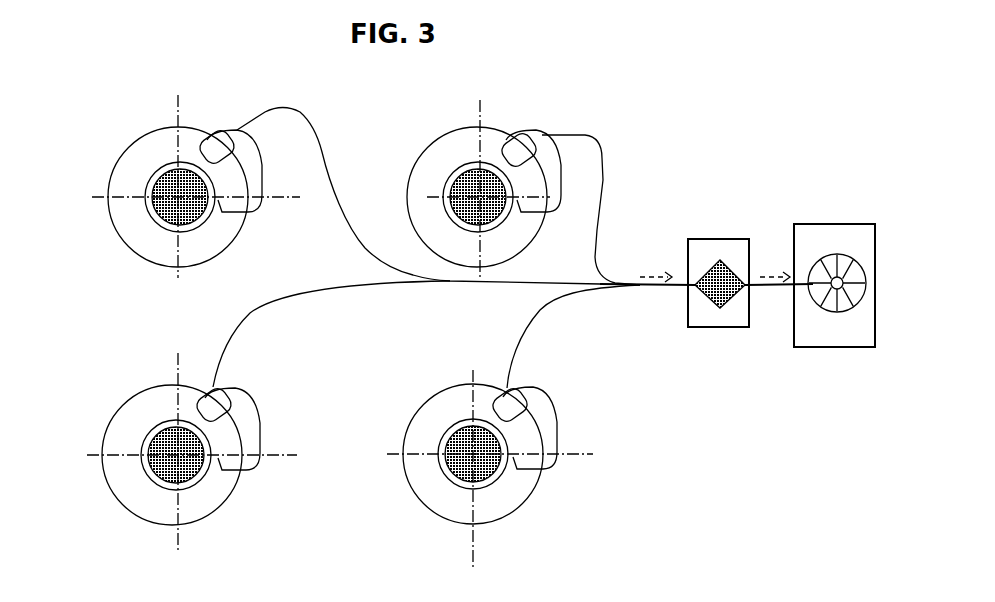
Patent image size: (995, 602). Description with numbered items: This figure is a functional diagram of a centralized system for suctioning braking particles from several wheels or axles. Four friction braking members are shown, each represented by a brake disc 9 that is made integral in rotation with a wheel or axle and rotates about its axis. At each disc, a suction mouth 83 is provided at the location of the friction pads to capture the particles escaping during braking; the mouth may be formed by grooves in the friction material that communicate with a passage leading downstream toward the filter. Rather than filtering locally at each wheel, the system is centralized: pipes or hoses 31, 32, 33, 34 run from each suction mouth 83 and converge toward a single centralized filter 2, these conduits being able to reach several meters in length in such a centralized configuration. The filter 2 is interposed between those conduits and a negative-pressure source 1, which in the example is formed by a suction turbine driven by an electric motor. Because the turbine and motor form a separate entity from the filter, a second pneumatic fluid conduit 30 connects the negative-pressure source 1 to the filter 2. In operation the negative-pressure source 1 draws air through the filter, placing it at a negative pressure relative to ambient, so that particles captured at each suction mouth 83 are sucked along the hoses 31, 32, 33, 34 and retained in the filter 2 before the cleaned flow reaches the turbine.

The negative-pressure source 1 is at (850, 213).
The filter 2 is at (712, 230).
The brake disc 9 is at (118, 142).
The second pneumatic fluid conduit 30 is at (767, 288).
The pipe or hose 31 is at (310, 123).
The pipe or hose 32 is at (600, 142).
The pipe or hose 33 is at (224, 352).
The pipe or hose 34 is at (520, 334).
The suction mouth 83 is at (218, 136).